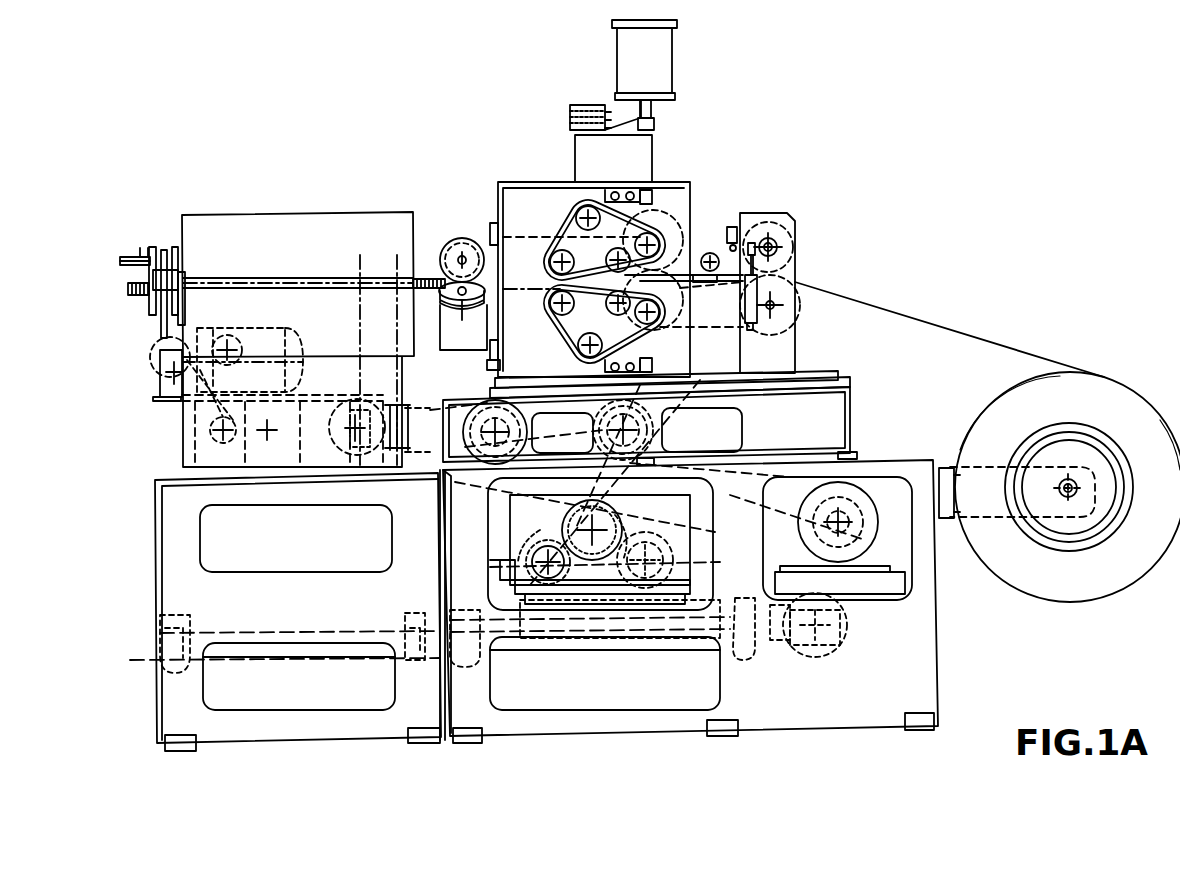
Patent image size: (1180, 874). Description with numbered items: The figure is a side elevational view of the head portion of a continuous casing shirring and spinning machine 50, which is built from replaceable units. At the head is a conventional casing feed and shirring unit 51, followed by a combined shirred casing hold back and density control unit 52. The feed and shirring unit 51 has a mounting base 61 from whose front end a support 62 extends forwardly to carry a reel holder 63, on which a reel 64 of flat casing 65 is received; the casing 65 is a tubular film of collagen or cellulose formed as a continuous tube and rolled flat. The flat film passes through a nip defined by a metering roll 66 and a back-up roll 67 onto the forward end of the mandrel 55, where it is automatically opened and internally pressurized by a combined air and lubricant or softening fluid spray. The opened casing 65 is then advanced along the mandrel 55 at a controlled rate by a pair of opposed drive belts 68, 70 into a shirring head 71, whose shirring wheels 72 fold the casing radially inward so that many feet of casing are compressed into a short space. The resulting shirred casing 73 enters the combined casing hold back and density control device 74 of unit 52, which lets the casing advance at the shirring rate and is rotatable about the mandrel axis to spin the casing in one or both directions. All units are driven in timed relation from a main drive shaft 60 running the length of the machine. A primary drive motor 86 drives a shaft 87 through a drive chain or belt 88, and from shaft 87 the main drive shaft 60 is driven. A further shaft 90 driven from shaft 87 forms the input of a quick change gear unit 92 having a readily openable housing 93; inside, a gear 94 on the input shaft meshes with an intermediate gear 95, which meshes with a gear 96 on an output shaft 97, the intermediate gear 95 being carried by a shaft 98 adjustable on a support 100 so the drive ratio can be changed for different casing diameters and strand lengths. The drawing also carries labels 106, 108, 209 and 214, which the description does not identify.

The continuous casing shirring and spinning machine 50 is at (923, 206).
The casing feed and shirring unit 51 is at (793, 744).
The combined shirred casing hold back and density control unit 52 is at (288, 757).
The mandrel 55 is at (677, 272).
The main drive shaft 60 is at (280, 655).
The mounting base 61 is at (891, 456).
The support 62 is at (952, 532).
The reel holder 63 is at (1057, 528).
The reel 64 is at (1075, 568).
The casing 65 is at (1115, 588).
The metering roll 66 is at (806, 310).
The back-up roll 67 is at (796, 240).
The drive belt 68 is at (570, 215).
The drive belt 70 is at (568, 346).
The shirring head 71 is at (490, 216).
The shirring wheels 72 is at (459, 242).
The shirred casing 73 is at (142, 296).
The combined casing hold back and density control device 74 is at (304, 212).
The primary drive motor 86 is at (870, 520).
The shaft 87 is at (735, 452).
The drive chain or belt 88 is at (742, 453).
The shaft 90 is at (544, 558).
The quick change gear unit 92 is at (498, 512).
The housing 93 is at (705, 527).
The gear 94 is at (493, 562).
The intermediate gear 95 is at (624, 538).
The gear 96 is at (642, 542).
The output shaft 97 is at (710, 572).
The shaft 98 is at (600, 536).
The support 100 is at (543, 512).
The lower frame section 106 is at (175, 470).
The motor mount 108 is at (178, 428).
The adjusting plates 209 is at (170, 240).
The adjusting bracket 214 is at (128, 255).